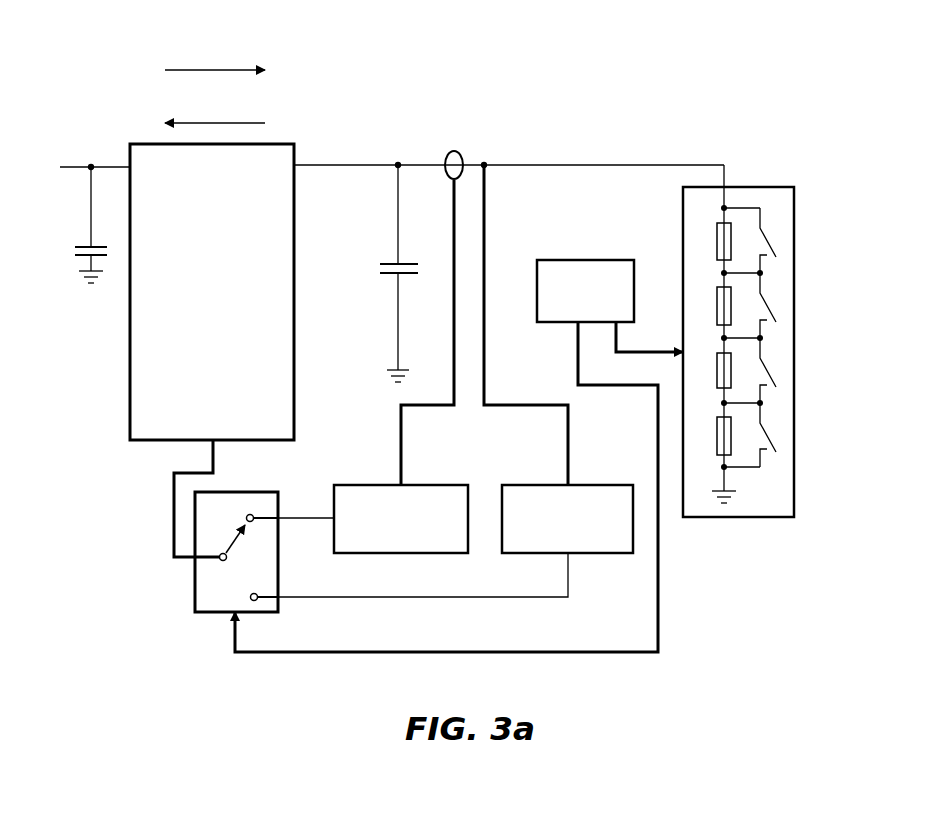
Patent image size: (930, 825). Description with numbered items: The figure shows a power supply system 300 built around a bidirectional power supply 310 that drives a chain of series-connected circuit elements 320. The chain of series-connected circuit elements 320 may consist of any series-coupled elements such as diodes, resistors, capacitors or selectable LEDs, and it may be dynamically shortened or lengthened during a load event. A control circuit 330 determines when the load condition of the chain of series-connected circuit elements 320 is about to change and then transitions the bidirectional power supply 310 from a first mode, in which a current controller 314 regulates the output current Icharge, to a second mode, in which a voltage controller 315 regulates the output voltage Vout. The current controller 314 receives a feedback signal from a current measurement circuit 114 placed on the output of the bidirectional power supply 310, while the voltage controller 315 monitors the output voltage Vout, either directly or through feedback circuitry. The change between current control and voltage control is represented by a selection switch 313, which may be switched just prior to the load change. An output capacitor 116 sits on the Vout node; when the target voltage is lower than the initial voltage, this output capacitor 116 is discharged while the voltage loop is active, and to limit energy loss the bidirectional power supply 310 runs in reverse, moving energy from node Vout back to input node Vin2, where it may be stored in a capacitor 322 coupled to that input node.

The power supply system 300 is at (130, 38).
The bidirectional power supply 310 is at (297, 143).
The capacitor 322 is at (84, 245).
The current measurement circuit 114 is at (452, 150).
The output capacitor 116 is at (405, 262).
The control circuit 330 is at (587, 258).
The chain of series-connected circuit elements 320 is at (760, 184).
The current controller 314 is at (375, 483).
The voltage controller 315 is at (597, 483).
The selection switch 313 is at (195, 584).